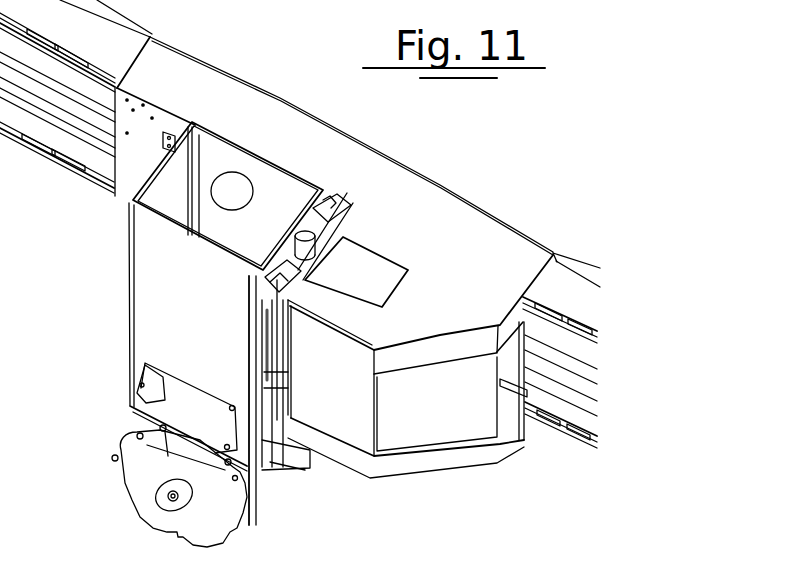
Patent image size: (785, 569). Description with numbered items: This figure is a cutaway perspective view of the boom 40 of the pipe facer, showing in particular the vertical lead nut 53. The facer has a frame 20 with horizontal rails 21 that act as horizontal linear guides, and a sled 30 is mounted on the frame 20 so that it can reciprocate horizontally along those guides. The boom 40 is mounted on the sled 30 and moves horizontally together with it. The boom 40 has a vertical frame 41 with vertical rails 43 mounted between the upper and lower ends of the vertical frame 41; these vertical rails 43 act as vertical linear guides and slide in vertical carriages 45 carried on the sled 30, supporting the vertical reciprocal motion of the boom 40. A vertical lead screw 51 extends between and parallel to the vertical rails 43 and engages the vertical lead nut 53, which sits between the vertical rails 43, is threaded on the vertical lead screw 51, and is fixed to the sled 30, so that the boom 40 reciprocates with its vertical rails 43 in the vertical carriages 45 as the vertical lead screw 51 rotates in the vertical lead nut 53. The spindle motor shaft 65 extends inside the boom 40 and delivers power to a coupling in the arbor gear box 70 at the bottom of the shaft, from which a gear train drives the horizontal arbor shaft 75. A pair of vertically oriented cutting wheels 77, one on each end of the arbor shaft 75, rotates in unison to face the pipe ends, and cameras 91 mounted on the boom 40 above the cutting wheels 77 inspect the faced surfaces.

The frame 20 is at (577, 263).
The horizontal rails 21 is at (577, 447).
The sled 30 is at (208, 77).
The boom 40 is at (98, 285).
The vertical frame 41 is at (130, 328).
The vertical rails 43 is at (338, 148).
The vertical carriages 45 is at (350, 195).
The vertical lead screw 51 is at (302, 232).
The vertical lead nut 53 is at (327, 250).
The spindle motor shaft 65 is at (213, 193).
The arbor gear box 70 is at (278, 493).
The horizontal arbor shaft 75 is at (168, 486).
The cutting wheels 77 is at (143, 510).
The cameras 91 is at (138, 391).